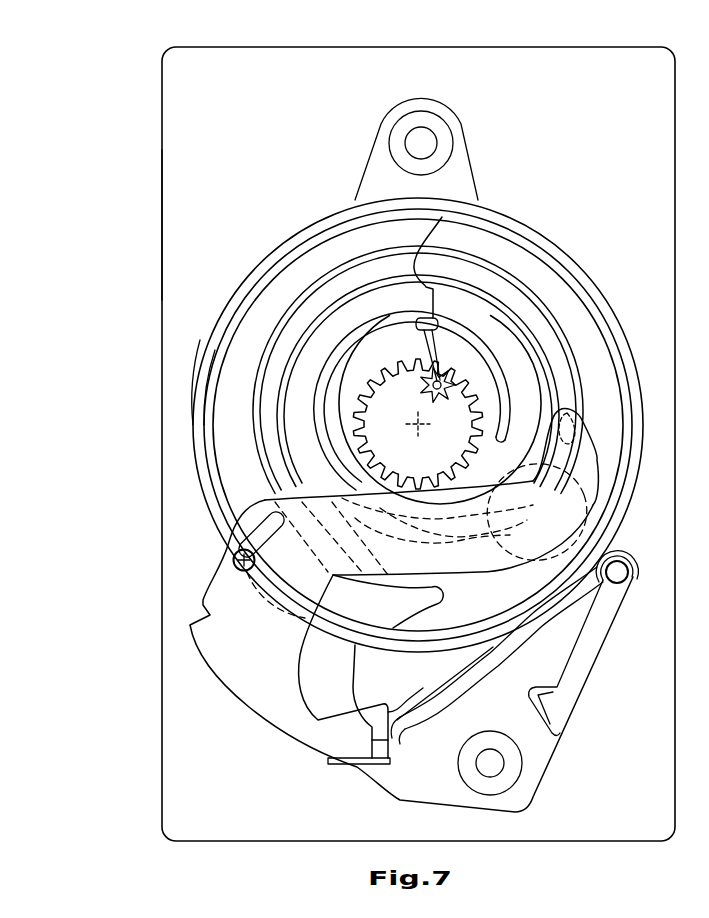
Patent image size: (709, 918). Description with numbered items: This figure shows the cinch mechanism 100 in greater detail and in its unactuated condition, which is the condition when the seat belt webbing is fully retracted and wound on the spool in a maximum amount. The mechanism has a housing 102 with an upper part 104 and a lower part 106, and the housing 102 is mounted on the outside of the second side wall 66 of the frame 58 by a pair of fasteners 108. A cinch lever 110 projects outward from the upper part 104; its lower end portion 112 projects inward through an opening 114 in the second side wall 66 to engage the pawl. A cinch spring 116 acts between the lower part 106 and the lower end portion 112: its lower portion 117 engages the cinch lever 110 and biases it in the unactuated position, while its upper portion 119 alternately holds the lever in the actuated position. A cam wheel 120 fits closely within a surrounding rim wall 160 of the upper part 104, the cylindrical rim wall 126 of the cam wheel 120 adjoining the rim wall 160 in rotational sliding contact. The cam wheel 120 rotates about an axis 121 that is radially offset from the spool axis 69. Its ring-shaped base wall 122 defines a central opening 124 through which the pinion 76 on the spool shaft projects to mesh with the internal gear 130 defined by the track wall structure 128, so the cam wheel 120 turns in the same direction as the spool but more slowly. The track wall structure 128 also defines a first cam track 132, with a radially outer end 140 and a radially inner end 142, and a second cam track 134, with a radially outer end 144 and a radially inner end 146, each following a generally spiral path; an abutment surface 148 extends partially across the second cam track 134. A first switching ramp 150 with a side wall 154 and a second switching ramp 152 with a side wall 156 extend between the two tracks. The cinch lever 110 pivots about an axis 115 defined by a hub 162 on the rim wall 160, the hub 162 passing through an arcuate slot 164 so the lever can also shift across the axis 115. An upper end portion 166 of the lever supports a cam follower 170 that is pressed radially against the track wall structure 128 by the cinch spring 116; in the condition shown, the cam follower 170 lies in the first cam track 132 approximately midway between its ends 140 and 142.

The frame 58 is at (156, 95).
The second side wall 66 is at (190, 157).
The axis 69 is at (378, 360).
The pinion 76 is at (433, 381).
The cinch mechanism 100 is at (340, 210).
The housing 102 is at (502, 214).
The upper part 104 is at (192, 443).
The lower part 106 is at (527, 773).
The fasteners 108 is at (423, 143).
The cinch lever 110 is at (223, 600).
The lower end portion 112 is at (322, 742).
The opening 114 is at (360, 678).
The axis 115 is at (230, 552).
The cinch spring 116 is at (572, 667).
The lower portion 117 is at (362, 765).
The upper portion 119 is at (433, 700).
The cam wheel 120 is at (218, 343).
The axis 121 is at (421, 442).
The base wall 122 is at (235, 373).
The central opening 124 is at (362, 368).
The rim wall 126 is at (212, 390).
The track wall structure 128 is at (242, 404).
The internal gear 130 is at (262, 320).
The first cam track 132 is at (500, 277).
The second cam track 134 is at (470, 348).
The radially outer end 140 is at (407, 603).
The radially inner end 142 is at (422, 318).
The radially outer end 144 is at (502, 553).
The radially inner end 146 is at (527, 367).
The abutment surface 148 is at (442, 217).
The first switching ramp 150 is at (507, 340).
The second switching ramp 152 is at (480, 487).
The side wall 154 is at (490, 357).
The side wall 156 is at (490, 477).
The rim wall 160 is at (198, 415).
The hub 162 is at (233, 562).
The arcuate slot 164 is at (250, 522).
The upper end portion 166 is at (580, 463).
The cam follower 170 is at (570, 412).